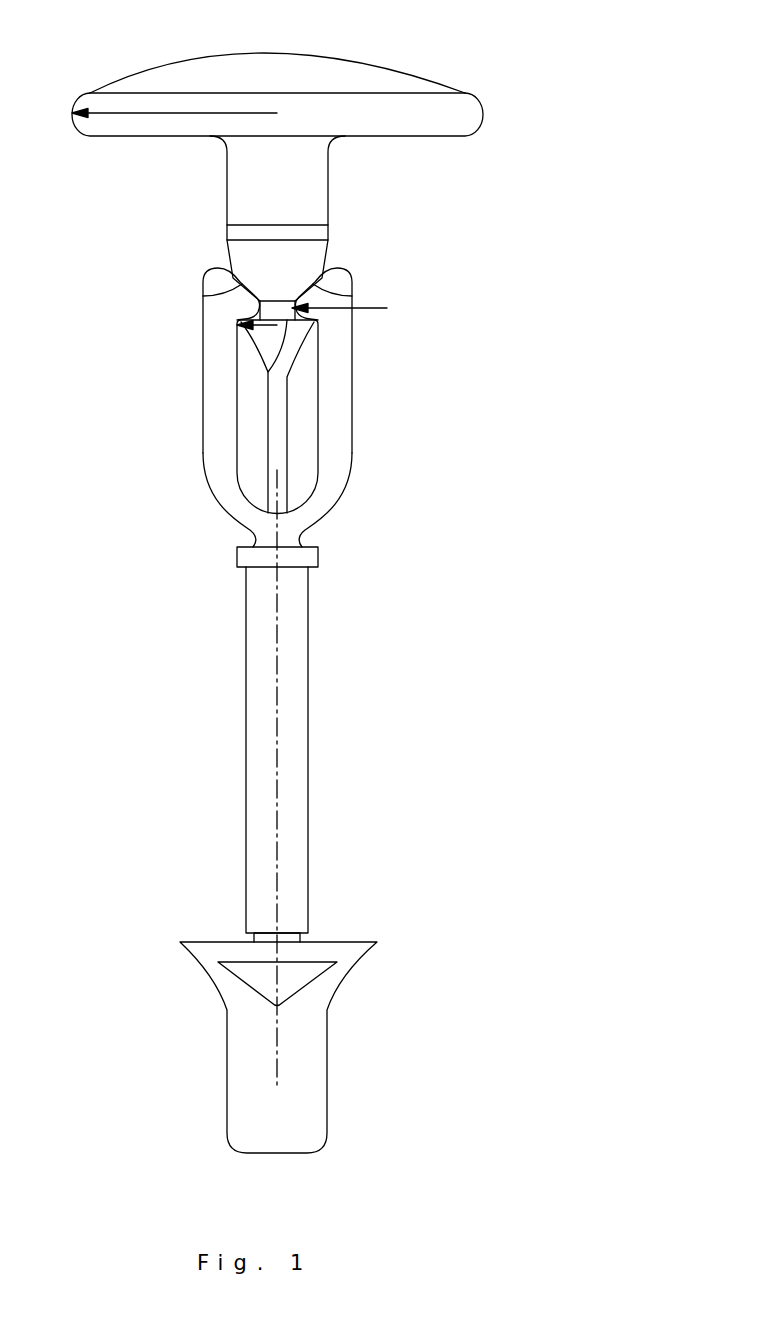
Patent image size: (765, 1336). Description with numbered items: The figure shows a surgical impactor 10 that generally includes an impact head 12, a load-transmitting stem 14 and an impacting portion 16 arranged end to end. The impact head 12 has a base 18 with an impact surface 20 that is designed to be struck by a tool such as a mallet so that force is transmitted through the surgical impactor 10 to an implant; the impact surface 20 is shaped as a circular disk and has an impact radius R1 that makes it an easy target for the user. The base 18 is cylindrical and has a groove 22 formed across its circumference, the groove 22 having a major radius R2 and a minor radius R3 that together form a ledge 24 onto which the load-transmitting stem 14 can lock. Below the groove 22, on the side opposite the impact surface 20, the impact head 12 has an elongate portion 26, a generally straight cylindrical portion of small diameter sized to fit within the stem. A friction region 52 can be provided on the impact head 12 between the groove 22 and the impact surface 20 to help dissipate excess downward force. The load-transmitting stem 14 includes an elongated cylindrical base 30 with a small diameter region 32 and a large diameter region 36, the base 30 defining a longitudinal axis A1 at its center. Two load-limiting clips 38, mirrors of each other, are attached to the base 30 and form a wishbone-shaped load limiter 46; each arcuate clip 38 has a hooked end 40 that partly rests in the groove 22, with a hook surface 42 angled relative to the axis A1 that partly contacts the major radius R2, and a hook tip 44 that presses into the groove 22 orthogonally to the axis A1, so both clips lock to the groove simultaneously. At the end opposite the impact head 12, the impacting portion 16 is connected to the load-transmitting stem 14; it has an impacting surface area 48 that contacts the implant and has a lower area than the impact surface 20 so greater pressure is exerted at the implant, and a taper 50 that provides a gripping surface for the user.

The surgical impactor 10 is at (536, 113).
The impact head 12 is at (271, 96).
The load-transmitting stem 14 is at (307, 877).
The impacting portion 16 is at (311, 1074).
The base 18 is at (274, 228).
The impact surface 20 is at (287, 58).
The groove 22 is at (278, 285).
The ledge 24 is at (285, 417).
The elongate portion 26 is at (288, 443).
The elongated cylindrical base 30 is at (310, 758).
The small diameter region 32 is at (302, 937).
The large diameter region 36 is at (237, 557).
The load-limiting clip 38 is at (352, 425).
The hooked end 40 is at (218, 268).
The hook surface 42 is at (240, 285).
The hook tip 44 is at (254, 308).
The load limiter 46 is at (304, 392).
The impacting surface area 48 is at (283, 1155).
The taper 50 is at (357, 960).
The friction region 52 is at (228, 253).
The impact radius R1 is at (157, 114).
The major radius R2 is at (237, 325).
The minor radius R3 is at (355, 313).
The axis A1 is at (275, 720).